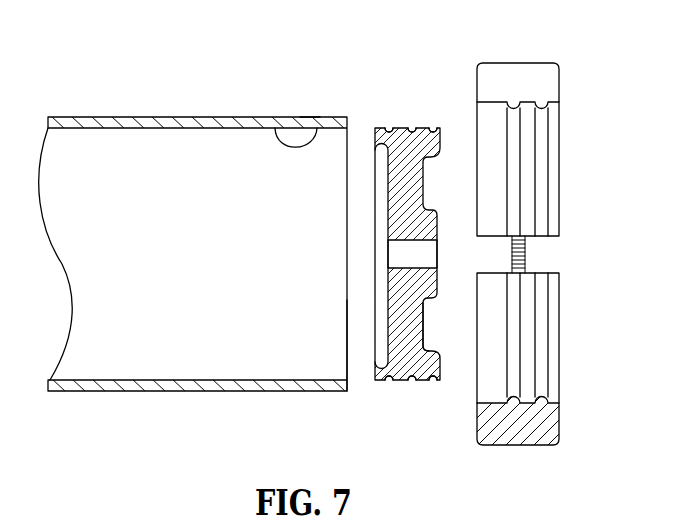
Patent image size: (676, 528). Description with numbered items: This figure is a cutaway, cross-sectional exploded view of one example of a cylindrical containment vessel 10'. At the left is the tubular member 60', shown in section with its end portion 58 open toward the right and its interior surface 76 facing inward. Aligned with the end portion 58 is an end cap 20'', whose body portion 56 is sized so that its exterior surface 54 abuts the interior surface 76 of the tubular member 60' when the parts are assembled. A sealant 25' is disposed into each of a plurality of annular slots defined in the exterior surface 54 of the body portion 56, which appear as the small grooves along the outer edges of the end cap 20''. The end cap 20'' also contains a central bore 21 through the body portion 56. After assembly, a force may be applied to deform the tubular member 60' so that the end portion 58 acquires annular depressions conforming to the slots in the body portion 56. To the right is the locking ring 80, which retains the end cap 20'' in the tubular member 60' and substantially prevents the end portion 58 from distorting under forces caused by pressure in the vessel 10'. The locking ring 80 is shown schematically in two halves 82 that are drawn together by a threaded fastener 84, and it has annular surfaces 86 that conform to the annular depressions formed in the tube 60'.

The tubular member 60' is at (188, 230).
The interior surface 76 is at (275, 128).
The end portion 58 is at (311, 117).
The end cap 20'' is at (390, 261).
The exterior surface 54 is at (404, 130).
The bore 21 is at (402, 254).
The body portion 56 is at (432, 328).
The sealant 25' is at (424, 426).
The cylindrical containment vessel 10' is at (384, 396).
The locking ring 80 is at (476, 232).
The halves 82 is at (560, 82).
The annular surfaces 86 is at (540, 110).
The threaded fastener 84 is at (527, 255).